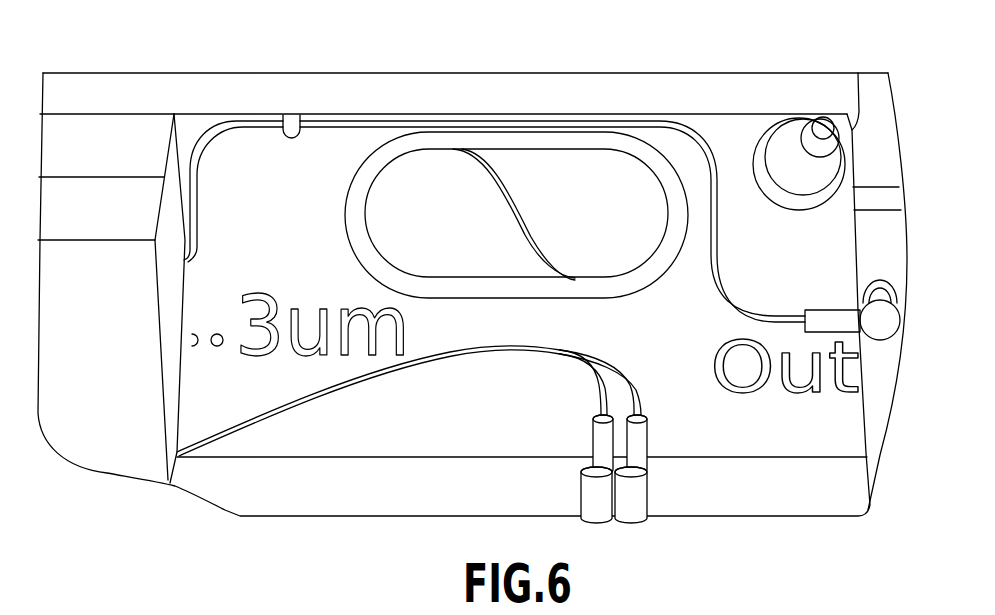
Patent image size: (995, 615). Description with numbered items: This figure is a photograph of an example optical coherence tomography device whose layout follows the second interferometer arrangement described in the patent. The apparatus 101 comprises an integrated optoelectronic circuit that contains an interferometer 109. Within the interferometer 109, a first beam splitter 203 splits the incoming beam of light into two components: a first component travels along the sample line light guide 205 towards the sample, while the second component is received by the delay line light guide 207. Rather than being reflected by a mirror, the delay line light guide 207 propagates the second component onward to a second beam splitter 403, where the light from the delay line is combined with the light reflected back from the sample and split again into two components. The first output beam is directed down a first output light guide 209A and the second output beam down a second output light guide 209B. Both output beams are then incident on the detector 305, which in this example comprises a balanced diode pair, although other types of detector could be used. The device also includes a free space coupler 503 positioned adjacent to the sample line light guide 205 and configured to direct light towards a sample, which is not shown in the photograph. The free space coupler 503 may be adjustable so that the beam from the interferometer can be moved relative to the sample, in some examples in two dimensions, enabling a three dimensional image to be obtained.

The apparatus 101 is at (747, 167).
The interferometer 109 is at (550, 143).
The first beam splitter 203 is at (483, 142).
The sample line light guide 205 is at (718, 248).
The delay line light guide 207 is at (503, 200).
The first output light guide 209A is at (633, 382).
The second output light guide 209B is at (582, 365).
The detector 305 is at (184, 258).
The second beam splitter 403 is at (295, 412).
The free space coupler 503 is at (883, 323).